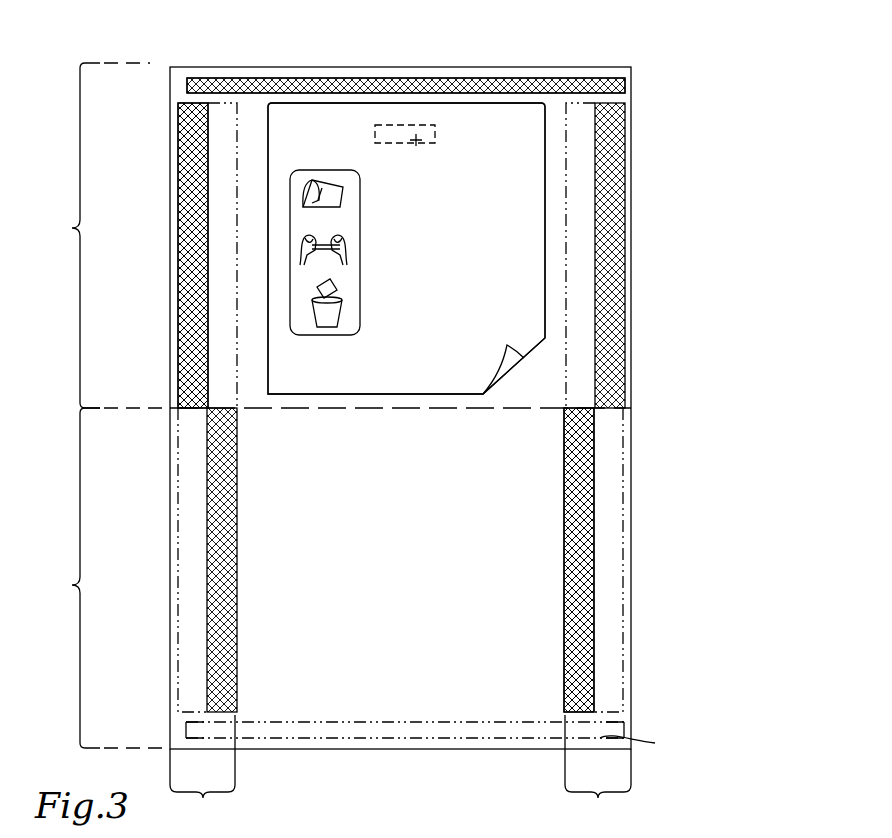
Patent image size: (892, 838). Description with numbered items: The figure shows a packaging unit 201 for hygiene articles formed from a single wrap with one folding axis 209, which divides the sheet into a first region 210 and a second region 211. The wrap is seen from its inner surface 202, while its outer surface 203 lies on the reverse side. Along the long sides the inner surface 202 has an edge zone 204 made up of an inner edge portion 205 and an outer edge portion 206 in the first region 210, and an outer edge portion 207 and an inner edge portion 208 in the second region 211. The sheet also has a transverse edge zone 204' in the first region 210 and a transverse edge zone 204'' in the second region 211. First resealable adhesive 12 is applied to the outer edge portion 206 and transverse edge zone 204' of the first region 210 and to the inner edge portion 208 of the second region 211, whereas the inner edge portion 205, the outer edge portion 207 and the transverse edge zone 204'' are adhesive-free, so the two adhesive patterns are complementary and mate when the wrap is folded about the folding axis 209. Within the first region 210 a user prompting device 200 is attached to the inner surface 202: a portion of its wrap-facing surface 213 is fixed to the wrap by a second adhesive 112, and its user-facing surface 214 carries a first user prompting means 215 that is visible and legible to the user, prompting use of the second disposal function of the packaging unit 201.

The first resealable adhesive 12 is at (227, 84).
The second adhesive 112 is at (420, 143).
The user prompting device 200 is at (333, 137).
The packaging unit 201 is at (731, 93).
The inner surface 202 is at (426, 596).
The outer surface 203 is at (377, 687).
The edge zone 204 is at (403, 770).
The transverse edge zone 204' is at (406, 61).
The transverse edge zone 204'' is at (420, 762).
The inner edge portion 205 is at (200, 220).
The outer edge portion 206 is at (180, 265).
The outer edge portion 207 is at (192, 628).
The inner edge portion 208 is at (232, 505).
The folding axis 209 is at (398, 407).
The first region 210 is at (89, 235).
The second region 211 is at (98, 578).
The wrap-facing surface 213 is at (520, 352).
The user-facing surface 214 is at (466, 310).
The first user prompting means 215 is at (373, 237).